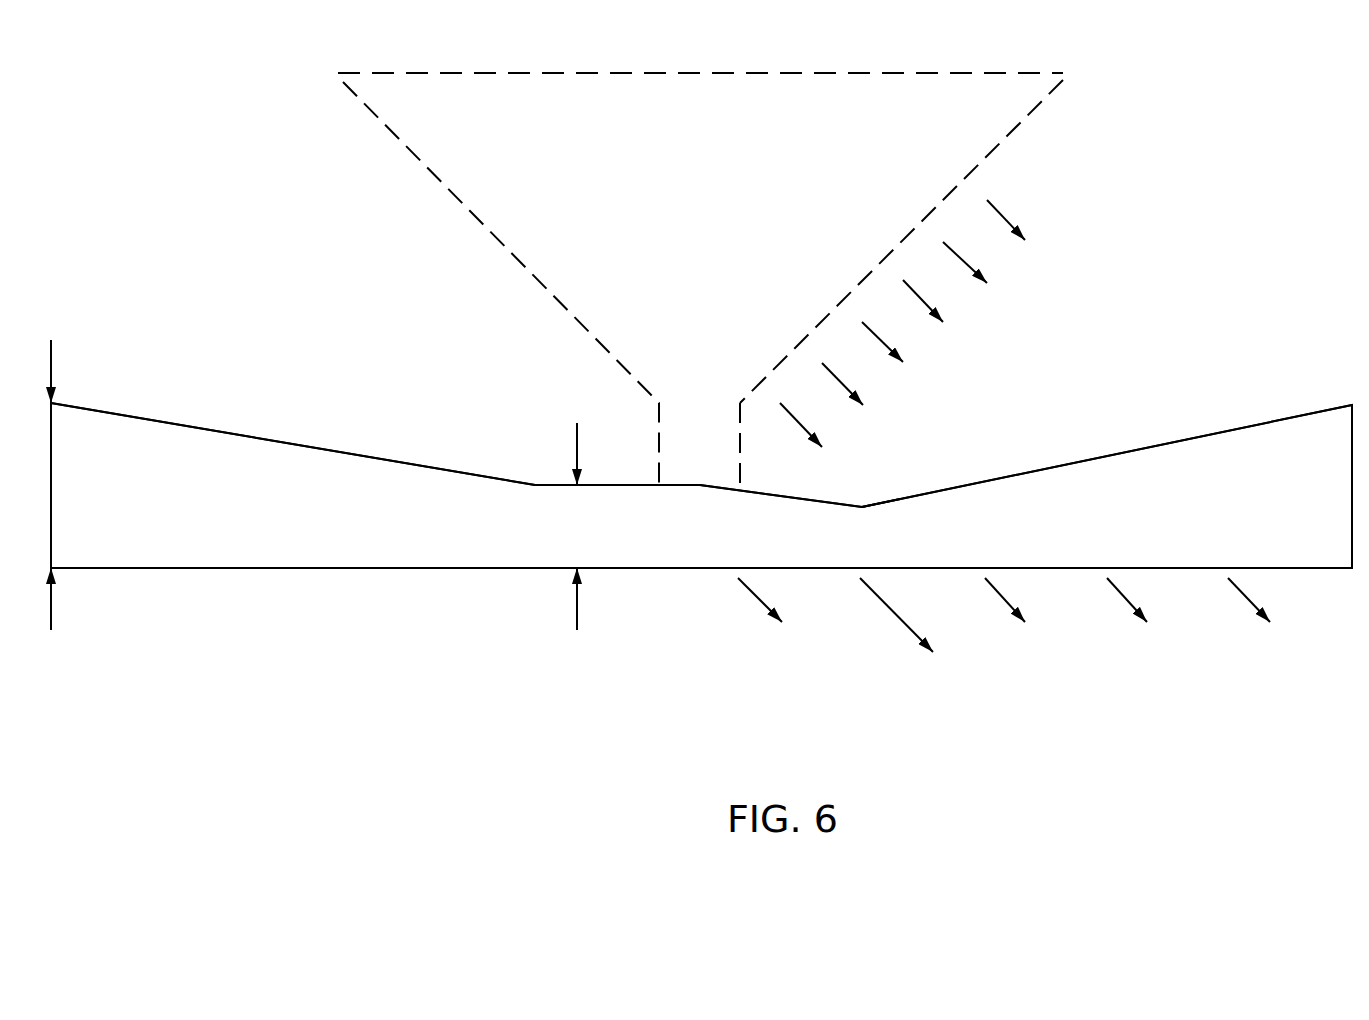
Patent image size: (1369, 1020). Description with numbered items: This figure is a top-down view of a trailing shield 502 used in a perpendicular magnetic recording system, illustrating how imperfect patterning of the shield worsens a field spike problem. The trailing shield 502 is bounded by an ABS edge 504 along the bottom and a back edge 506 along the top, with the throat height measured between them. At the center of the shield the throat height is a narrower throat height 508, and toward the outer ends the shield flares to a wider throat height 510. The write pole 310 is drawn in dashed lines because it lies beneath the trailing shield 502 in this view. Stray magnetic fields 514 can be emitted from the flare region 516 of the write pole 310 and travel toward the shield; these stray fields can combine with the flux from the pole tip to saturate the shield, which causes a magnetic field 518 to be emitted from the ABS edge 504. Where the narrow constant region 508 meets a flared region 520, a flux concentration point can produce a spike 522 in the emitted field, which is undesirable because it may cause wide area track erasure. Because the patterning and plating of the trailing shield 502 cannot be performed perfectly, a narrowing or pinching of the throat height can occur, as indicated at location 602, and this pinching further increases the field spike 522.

The write pole 310 is at (768, 180).
The trailing shield 502 is at (537, 570).
The ABS edge 504 is at (372, 570).
The back edge 506 is at (335, 450).
The narrower throat height 508 is at (575, 437).
The wider throat height 510 is at (52, 362).
The stray magnetic fields 514 is at (915, 288).
The flare region 516 is at (975, 170).
The magnetic field 518 is at (1115, 590).
The flared region 520 is at (1188, 432).
The spike 522 is at (888, 610).
The location of narrowing or pinching 602 is at (860, 505).